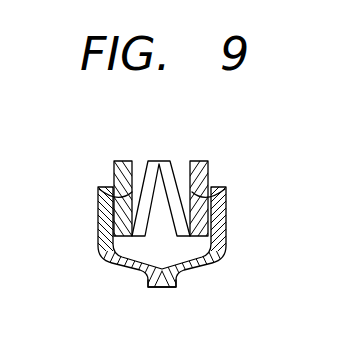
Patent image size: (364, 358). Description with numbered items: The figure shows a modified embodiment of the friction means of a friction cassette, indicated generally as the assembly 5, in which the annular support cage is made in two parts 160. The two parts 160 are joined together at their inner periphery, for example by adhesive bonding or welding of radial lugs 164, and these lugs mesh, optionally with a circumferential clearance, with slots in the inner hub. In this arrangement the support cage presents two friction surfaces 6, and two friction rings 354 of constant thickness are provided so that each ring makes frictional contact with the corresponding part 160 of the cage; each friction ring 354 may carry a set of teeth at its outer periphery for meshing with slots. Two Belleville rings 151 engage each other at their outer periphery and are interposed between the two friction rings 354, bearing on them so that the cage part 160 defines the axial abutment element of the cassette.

The connector assembly 5 is at (104, 284).
The friction surface 6 is at (116, 183).
The Belleville ring 151 is at (170, 161).
The part of the annular support cage 160 is at (99, 243).
The radial lug 164 is at (148, 288).
The friction ring 354 is at (128, 160).